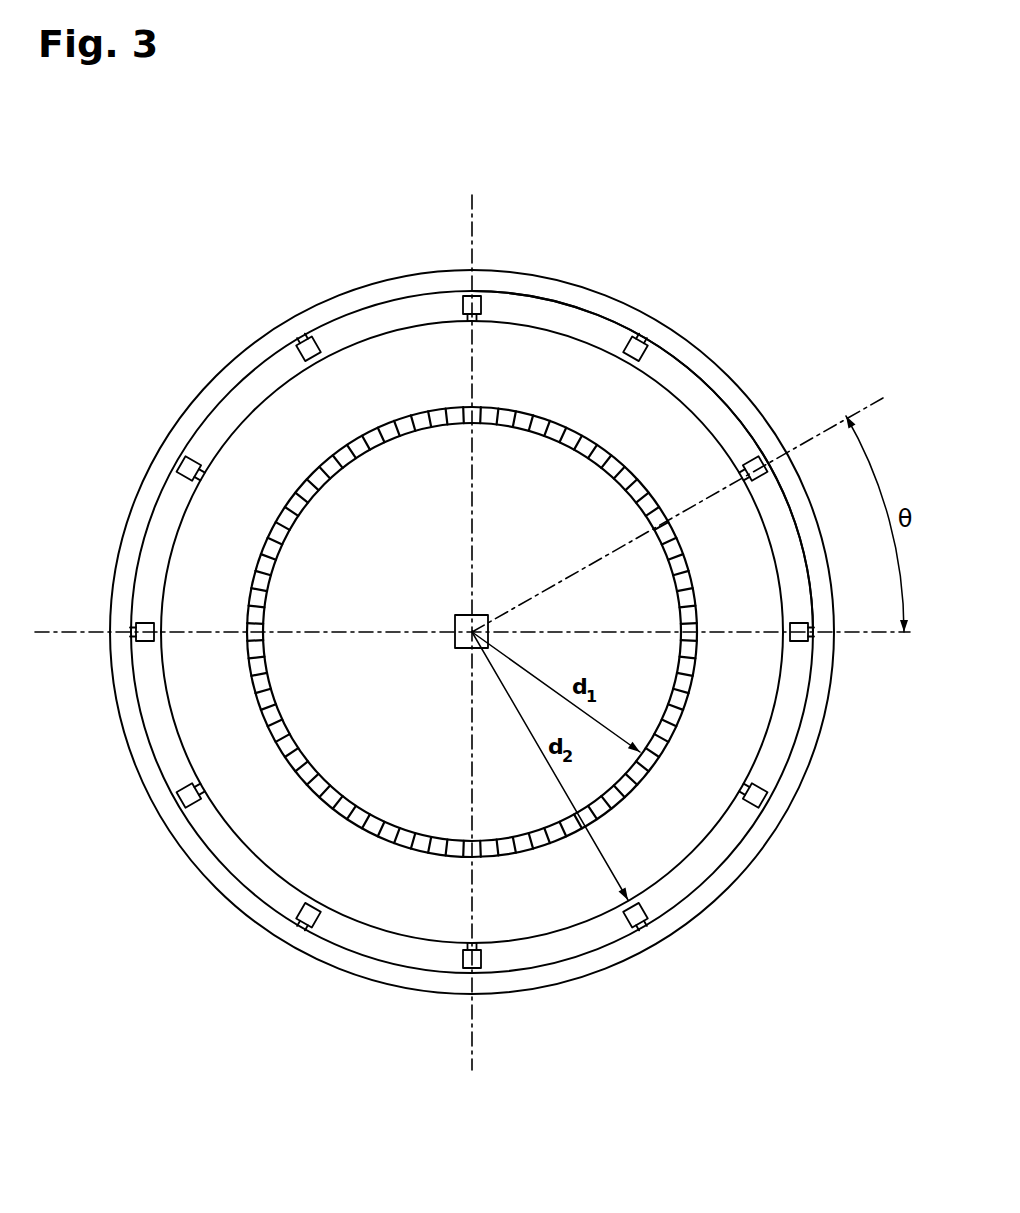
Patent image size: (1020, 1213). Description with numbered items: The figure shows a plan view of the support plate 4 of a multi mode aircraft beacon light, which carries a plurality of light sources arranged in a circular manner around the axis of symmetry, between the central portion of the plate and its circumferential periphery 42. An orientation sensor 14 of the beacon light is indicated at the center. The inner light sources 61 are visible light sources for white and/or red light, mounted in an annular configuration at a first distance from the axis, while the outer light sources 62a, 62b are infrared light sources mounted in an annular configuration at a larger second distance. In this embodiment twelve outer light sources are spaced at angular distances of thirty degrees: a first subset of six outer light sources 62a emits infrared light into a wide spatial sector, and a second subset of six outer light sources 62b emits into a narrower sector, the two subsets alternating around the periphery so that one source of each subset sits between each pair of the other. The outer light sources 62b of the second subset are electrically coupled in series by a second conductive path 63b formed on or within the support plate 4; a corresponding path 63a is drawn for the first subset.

The support plate 4 is at (653, 240).
The orientation sensor 14 is at (455, 614).
The circumferential periphery 42 is at (703, 332).
The inner light sources 61 is at (577, 478).
The outer light sources of the first subset 62a is at (800, 643).
The outer light sources of the second subset 62b is at (757, 460).
The outer carrier ring 63a is at (583, 310).
The second conductive path 63b is at (595, 346).